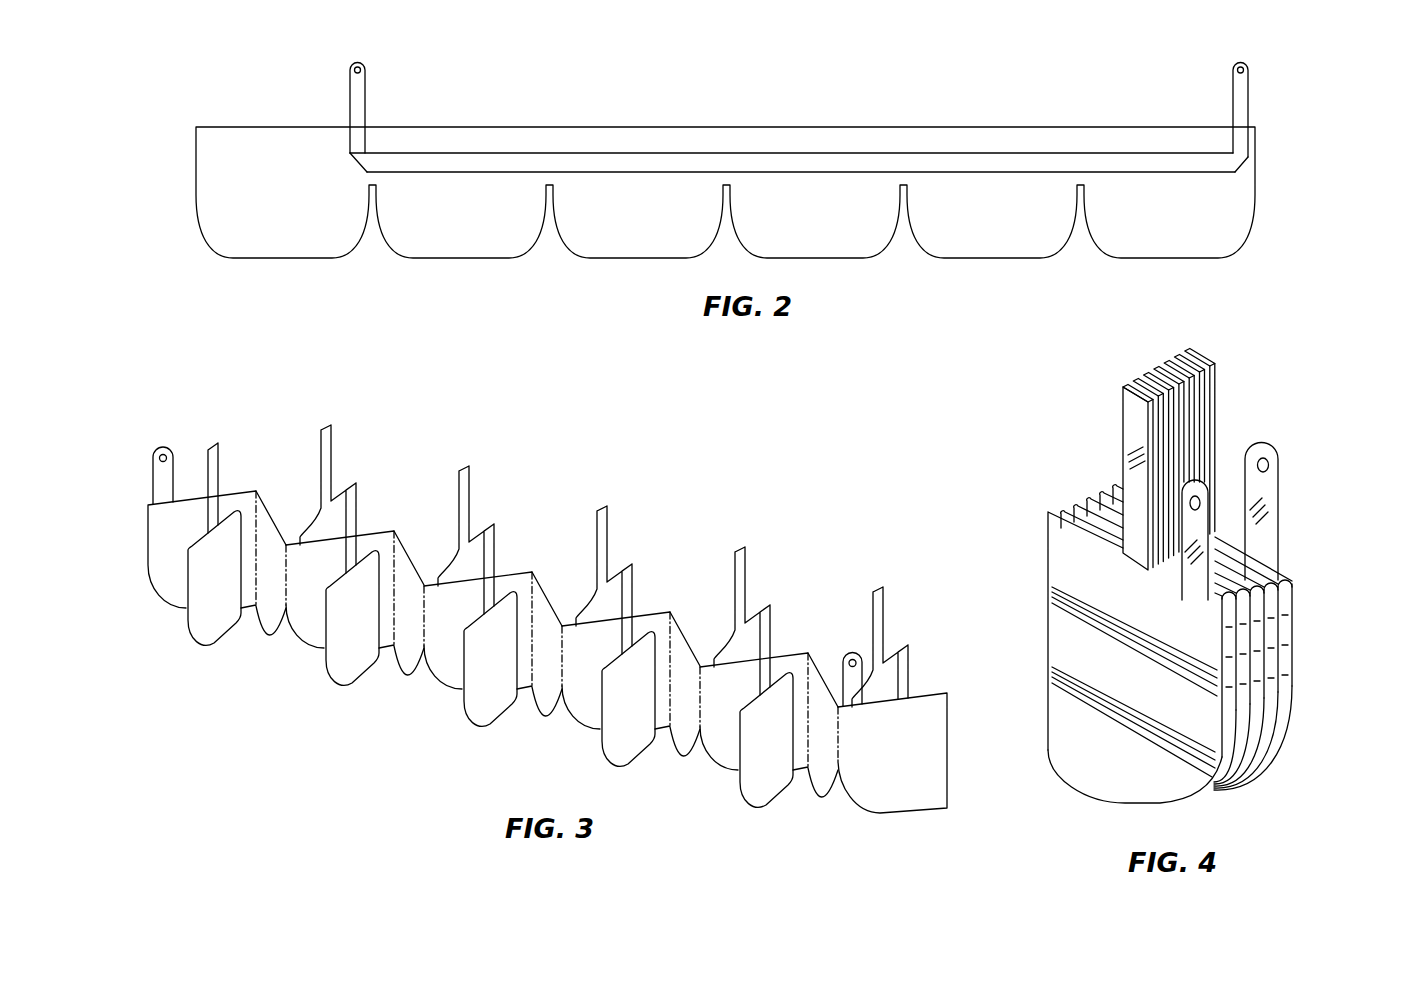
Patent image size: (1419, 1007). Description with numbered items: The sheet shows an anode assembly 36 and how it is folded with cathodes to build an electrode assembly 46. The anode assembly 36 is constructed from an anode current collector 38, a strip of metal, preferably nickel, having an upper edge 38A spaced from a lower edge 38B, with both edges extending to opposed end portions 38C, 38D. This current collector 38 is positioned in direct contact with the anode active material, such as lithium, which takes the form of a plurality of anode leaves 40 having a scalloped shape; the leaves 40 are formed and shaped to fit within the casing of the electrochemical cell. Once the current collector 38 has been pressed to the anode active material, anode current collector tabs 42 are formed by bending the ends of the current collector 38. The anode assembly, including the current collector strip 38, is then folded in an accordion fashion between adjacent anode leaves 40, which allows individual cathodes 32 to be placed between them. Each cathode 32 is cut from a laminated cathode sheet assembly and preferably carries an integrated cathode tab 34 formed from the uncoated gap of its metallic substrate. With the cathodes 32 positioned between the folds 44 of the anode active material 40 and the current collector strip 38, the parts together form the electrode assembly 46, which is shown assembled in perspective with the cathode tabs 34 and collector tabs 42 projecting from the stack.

In FIG. 3, the cathode 32 is at (590, 610).
In FIG. 4, the cathode 32 is at (1087, 513).
In FIG. 3, the cathode tab 34 is at (467, 492).
In FIG. 4, the cathode tab 34 is at (1215, 385).
In FIG. 2, the anode assembly 36 is at (1013, 75).
In FIG. 2, the anode current collector 38 is at (762, 160).
In FIG. 2, the upper edge 38A is at (865, 153).
In FIG. 2, the lower edge 38B is at (875, 172).
In FIG. 2, the end portion 38C is at (370, 163).
In FIG. 2, the end portion 38D is at (1223, 163).
In FIG. 2, the anode leaf 40 is at (623, 234).
In FIG. 3, the anode leaf 40 is at (265, 602).
In FIG. 4, the anode leaf 40 is at (1195, 728).
In FIG. 2, the anode current collector tab 42 is at (355, 102).
In FIG. 3, the anode current collector tab 42 is at (162, 472).
In FIG. 4, the anode current collector tab 42 is at (1270, 485).
In FIG. 3, the fold 44 is at (394, 529).
In FIG. 4, the fold 44 is at (1285, 612).
In FIG. 4, the electrode assembly 46 is at (1052, 388).